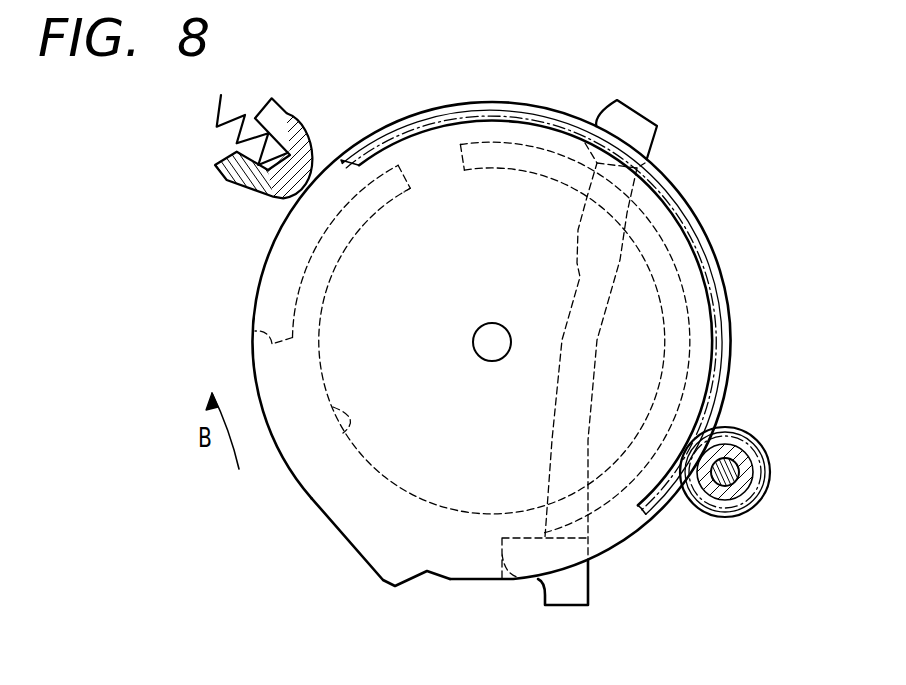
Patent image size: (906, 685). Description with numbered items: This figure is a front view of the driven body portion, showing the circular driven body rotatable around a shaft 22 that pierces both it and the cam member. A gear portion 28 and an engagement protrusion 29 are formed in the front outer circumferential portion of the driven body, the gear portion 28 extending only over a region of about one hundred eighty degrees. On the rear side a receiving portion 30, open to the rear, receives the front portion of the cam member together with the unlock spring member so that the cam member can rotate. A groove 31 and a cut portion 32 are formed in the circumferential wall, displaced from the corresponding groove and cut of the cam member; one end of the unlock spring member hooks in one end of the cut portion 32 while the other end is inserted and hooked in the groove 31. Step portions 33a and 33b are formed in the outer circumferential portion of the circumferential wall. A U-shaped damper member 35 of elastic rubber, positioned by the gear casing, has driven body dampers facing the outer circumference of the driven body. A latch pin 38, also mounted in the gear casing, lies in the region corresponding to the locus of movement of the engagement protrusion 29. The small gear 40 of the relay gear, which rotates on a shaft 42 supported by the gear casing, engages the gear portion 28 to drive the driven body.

The shaft 22 is at (479, 353).
The gear portion 28 is at (722, 267).
The engagement protrusion 29 is at (392, 585).
The receiving portion 30 is at (343, 431).
The groove 31 is at (405, 170).
The cut portion 32 is at (617, 535).
The step portion 33a is at (255, 331).
The step portion 33b is at (535, 540).
The damper member 35 is at (658, 146).
The latch pin 38 is at (258, 194).
The small gear 40 is at (723, 518).
The shaft 42 is at (747, 460).